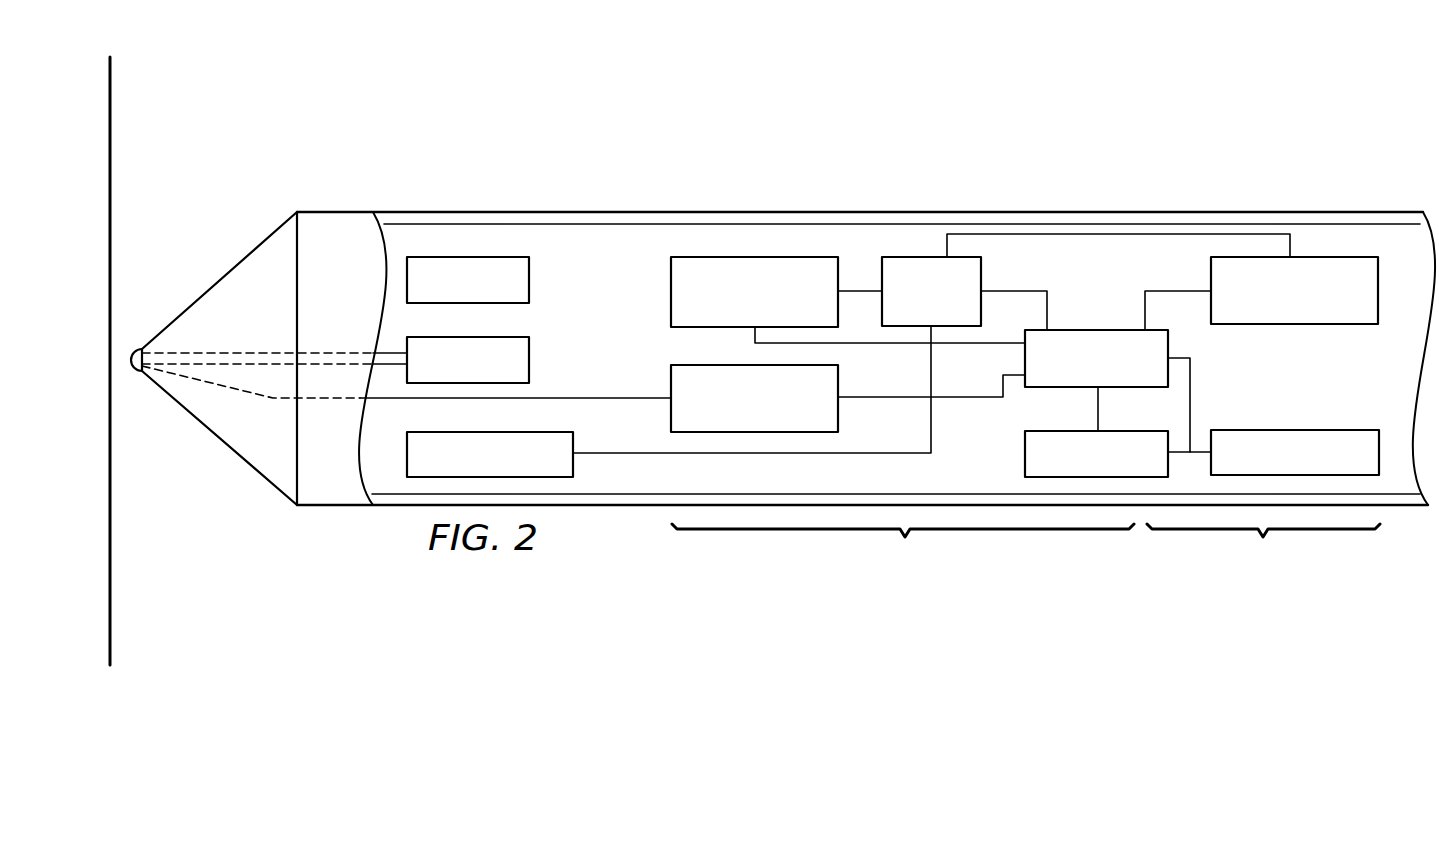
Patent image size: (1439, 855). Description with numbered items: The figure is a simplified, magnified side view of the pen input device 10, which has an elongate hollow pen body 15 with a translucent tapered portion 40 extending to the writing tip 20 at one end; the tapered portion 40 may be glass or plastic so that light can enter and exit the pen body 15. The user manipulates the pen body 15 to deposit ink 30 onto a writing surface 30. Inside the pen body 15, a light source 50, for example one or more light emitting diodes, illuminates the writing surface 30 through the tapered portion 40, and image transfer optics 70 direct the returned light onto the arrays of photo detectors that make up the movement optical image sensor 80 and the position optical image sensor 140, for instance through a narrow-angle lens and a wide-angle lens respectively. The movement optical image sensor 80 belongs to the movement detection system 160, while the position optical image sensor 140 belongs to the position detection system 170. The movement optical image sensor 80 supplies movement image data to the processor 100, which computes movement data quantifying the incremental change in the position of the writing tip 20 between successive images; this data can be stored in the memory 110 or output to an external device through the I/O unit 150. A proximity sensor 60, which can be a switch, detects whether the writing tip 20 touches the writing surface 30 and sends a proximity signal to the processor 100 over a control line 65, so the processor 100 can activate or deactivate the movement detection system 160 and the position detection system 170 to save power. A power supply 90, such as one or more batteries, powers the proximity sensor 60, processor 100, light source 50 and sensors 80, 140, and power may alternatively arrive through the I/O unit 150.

The pen input device 10 is at (866, 328).
The pen body 15 is at (748, 212).
The writing tip 20 is at (137, 372).
The ink / writing surface 30 is at (112, 155).
The tapered portion 40 is at (217, 277).
The light source 50 is at (575, 447).
The proximity sensor 60 is at (671, 378).
The control line 65 is at (903, 396).
The image transfer optics 70 is at (531, 282).
The movement optical image sensor 80 is at (671, 278).
The power supply 90 is at (983, 278).
The processor 100 is at (1100, 330).
The memory 110 is at (1025, 459).
The position optical image sensor 140 is at (1321, 327).
The I/O unit 150 is at (1273, 430).
The movement detection system 160 is at (903, 548).
The position detection system 170 is at (1263, 547).